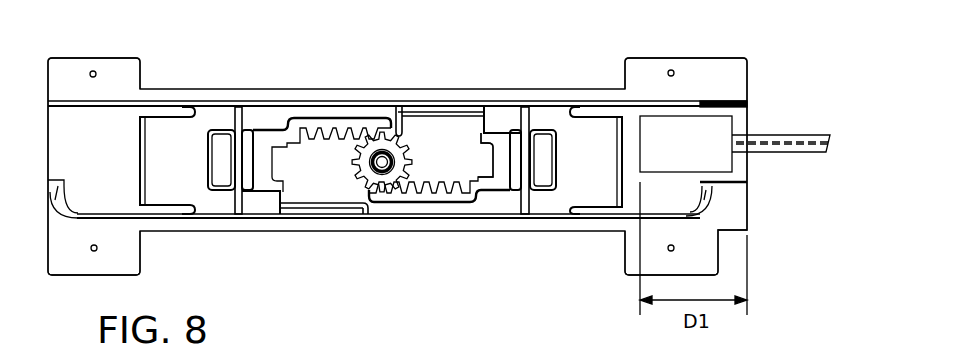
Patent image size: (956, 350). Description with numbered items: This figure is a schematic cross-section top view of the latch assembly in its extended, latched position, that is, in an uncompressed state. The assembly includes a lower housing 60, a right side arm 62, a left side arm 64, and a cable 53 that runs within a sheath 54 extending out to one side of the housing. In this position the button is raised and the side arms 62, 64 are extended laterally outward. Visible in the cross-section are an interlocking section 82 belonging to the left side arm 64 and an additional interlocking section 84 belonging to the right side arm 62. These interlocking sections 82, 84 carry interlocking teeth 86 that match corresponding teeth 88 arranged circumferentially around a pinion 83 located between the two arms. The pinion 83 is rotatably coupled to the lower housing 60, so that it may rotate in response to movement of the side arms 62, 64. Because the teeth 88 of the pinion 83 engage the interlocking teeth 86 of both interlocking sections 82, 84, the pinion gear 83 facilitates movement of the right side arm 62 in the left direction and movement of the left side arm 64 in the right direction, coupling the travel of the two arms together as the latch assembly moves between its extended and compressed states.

The lower housing 60 is at (78, 66).
The left side arm 64 is at (117, 117).
The right side arm 62 is at (618, 116).
The interlocking section 82 is at (297, 128).
The additional interlocking section 84 is at (465, 205).
The pinion 83 is at (372, 176).
The teeth 88 is at (401, 136).
The interlocking teeth 86 is at (451, 182).
The sheath 54 is at (810, 137).
The cable 53 is at (800, 150).